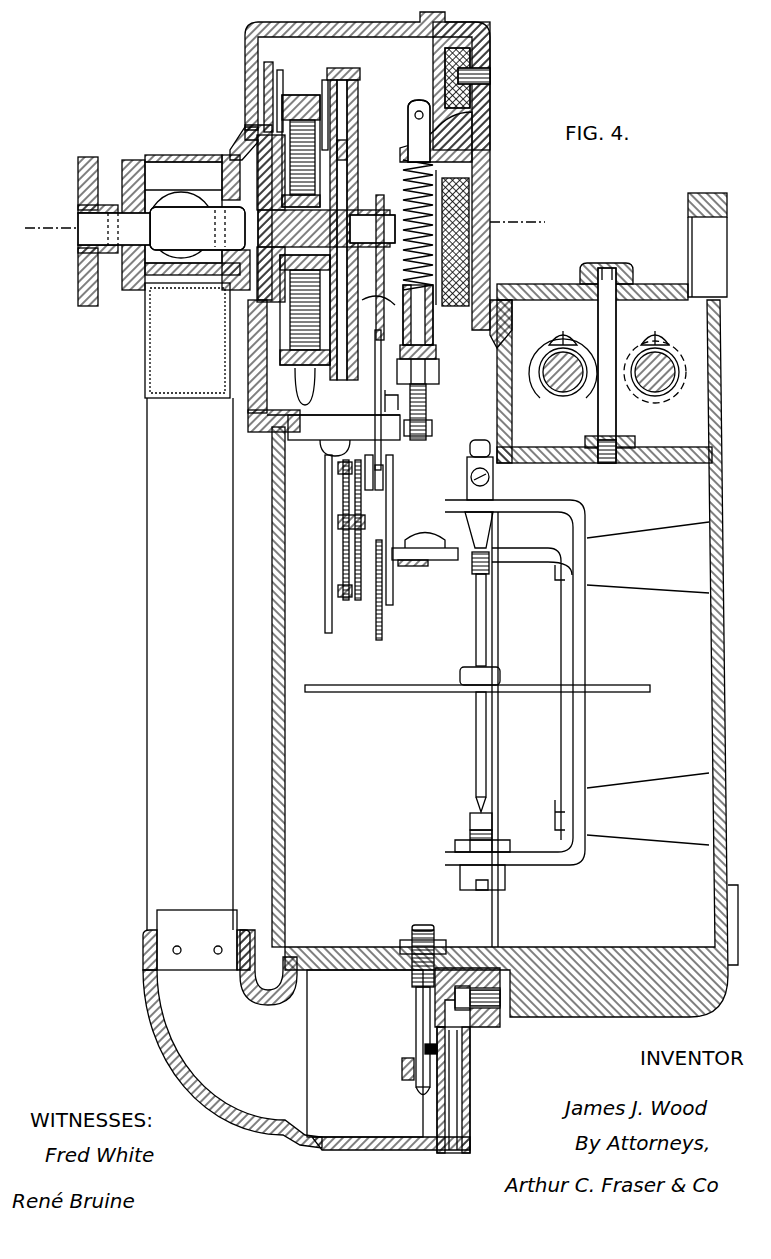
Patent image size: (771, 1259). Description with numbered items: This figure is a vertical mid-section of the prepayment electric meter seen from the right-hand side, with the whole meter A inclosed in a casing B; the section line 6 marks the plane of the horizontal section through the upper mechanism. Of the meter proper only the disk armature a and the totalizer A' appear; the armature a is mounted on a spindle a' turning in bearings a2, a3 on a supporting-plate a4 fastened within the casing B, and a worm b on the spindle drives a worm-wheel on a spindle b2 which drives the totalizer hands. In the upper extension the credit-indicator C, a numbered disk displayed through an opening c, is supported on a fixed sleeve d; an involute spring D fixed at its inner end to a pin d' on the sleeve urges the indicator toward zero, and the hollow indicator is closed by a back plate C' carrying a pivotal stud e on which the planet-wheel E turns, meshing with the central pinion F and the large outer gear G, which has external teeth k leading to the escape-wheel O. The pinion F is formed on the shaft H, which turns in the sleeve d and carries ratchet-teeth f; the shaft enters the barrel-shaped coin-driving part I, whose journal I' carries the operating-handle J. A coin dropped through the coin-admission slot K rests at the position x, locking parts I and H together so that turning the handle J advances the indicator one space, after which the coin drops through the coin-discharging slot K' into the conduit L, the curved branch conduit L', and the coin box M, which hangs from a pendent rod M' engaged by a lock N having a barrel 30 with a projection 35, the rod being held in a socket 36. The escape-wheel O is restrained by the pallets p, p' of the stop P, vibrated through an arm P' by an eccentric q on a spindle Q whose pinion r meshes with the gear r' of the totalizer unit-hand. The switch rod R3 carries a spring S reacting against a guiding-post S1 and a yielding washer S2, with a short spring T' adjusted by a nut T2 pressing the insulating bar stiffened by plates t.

The credit-indicator C is at (371, 222).
The opening c is at (265, 92).
The ratchet-teeth f is at (271, 218).
The involute spring D is at (300, 140).
The central pinion F is at (335, 268).
The planet-wheel E is at (350, 112).
The external teeth k is at (345, 73).
The pivotal stud e is at (347, 150).
The fixed tube or sleeve d is at (324, 228).
The pin d' is at (346, 225).
The metal plates t is at (384, 295).
The back plate C' is at (378, 292).
The spring S is at (405, 250).
The guiding-post S1 is at (405, 165).
The yielding washer S2 is at (408, 122).
The escape-wheel O is at (417, 253).
The short spring T' is at (430, 346).
The nut T2 is at (440, 372).
The rod R3 is at (430, 395).
The pallet p is at (370, 400).
The pallet p' is at (373, 399).
The outer gear G is at (333, 399).
The stop P is at (344, 427).
The spindle Q is at (335, 436).
The totalizer A' is at (313, 544).
The pinion r is at (327, 459).
The gear r' is at (332, 556).
The eccentric q is at (376, 478).
The arm P' is at (395, 546).
The spindle b2 is at (418, 566).
The coin-admission slot K is at (186, 206).
The coin x is at (181, 221).
The shaft H is at (197, 228).
The operating-handle J is at (78, 160).
The neck or journal I' is at (81, 225).
The coin-driving part I is at (114, 265).
The section line 6 is at (282, 226).
The coin-discharging slot K' is at (187, 340).
The conduit L is at (190, 664).
The curved branch conduit L' is at (232, 1029).
The casing B is at (509, 605).
The terminal screws u is at (607, 363).
The meter A is at (561, 729).
The supporting-plate a4 is at (560, 840).
The disk armature a is at (477, 678).
The bearing a3 is at (472, 512).
The worm b is at (470, 565).
The spindle a' is at (473, 693).
The bearing a2 is at (465, 840).
The coin box M is at (403, 1059).
The pendent rod M' is at (410, 1010).
The projection 35 is at (424, 1049).
The socket 36 is at (403, 1075).
The lock N is at (462, 1064).
The barrel 30 is at (462, 1113).